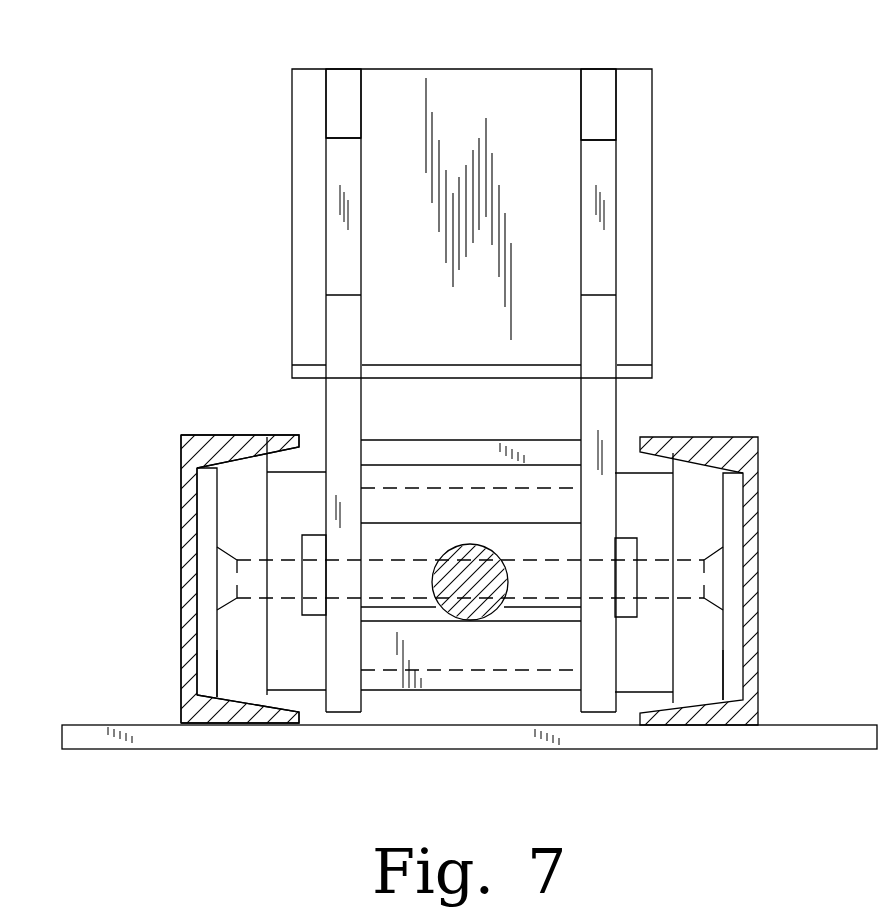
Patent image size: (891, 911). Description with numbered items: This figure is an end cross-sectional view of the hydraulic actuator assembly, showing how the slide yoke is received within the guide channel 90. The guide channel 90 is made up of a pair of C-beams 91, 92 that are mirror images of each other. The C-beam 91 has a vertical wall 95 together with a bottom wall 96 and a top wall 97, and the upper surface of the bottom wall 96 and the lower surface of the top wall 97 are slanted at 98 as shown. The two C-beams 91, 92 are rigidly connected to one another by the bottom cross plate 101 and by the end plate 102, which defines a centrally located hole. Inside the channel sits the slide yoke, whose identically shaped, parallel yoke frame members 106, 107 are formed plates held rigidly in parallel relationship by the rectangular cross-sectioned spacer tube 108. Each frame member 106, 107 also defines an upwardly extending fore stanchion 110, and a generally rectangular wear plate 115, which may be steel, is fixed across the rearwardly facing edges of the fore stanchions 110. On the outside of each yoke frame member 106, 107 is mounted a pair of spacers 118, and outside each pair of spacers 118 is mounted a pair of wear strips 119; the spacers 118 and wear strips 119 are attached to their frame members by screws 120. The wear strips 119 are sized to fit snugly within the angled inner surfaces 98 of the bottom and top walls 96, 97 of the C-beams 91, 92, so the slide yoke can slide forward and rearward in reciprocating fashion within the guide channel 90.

The guide channel 90 is at (772, 710).
The C-beam 91 is at (180, 578).
The C-beam 92 is at (758, 590).
The vertical wall 95 is at (180, 630).
The bottom wall 96 is at (237, 723).
The top wall 97 is at (228, 435).
The slanted inner surfaces 98 is at (238, 472).
The bottom cross plate 101 is at (620, 755).
The end plate 102 is at (548, 438).
The yoke frame member 106 is at (362, 157).
The yoke frame member 107 is at (618, 167).
The spacer tube 108 is at (527, 655).
The fore stanchion 110 is at (343, 107).
The wear plate 115 is at (528, 85).
The spacers 118 is at (651, 658).
The wear strips 119 is at (245, 655).
The screws 120 is at (688, 563).